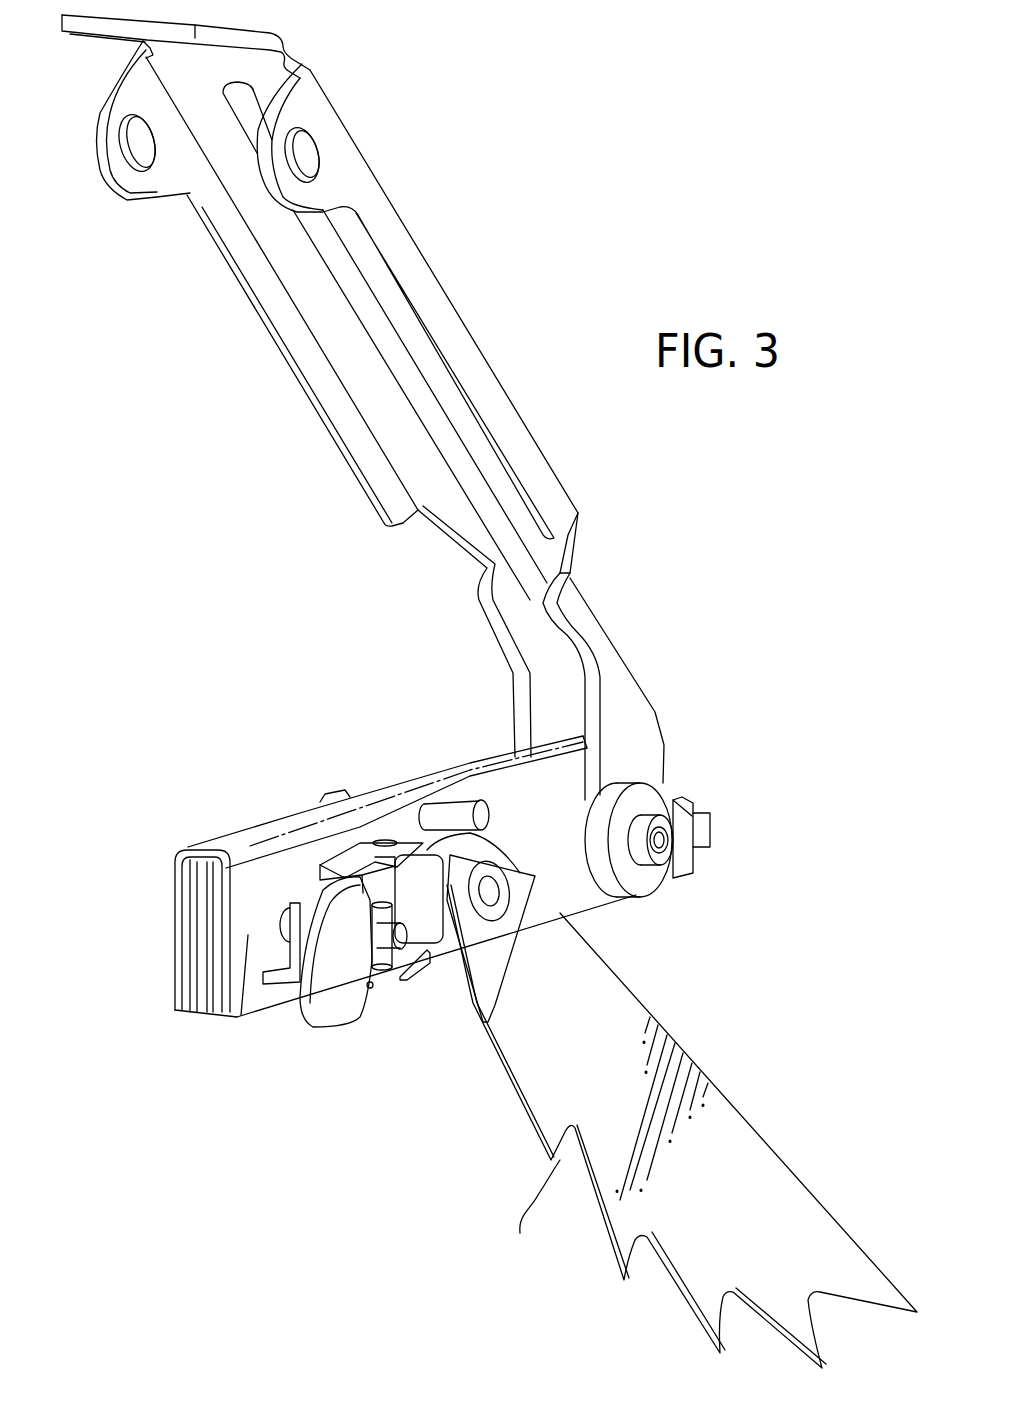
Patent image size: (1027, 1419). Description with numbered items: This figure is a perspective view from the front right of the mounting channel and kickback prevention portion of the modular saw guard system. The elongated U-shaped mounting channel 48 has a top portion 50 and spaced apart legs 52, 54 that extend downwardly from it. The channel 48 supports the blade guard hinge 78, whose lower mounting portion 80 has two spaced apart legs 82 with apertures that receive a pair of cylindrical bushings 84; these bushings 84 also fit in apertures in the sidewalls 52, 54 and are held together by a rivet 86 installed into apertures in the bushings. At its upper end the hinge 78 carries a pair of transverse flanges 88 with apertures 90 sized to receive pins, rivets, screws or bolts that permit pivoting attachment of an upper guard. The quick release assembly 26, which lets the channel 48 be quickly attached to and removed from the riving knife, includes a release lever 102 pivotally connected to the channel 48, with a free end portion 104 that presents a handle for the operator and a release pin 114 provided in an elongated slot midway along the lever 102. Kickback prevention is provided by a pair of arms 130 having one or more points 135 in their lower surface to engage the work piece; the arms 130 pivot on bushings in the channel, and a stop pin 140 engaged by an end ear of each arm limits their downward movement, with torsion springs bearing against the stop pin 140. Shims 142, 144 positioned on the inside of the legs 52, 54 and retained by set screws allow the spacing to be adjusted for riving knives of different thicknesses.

The quick release assembly 26 is at (450, 1070).
The U-shaped mounting channel 48 is at (173, 848).
The top portion 50 is at (253, 830).
The leg 52 is at (178, 898).
The leg 54 is at (247, 943).
The blade guard hinge 78 is at (472, 337).
The lower mounting portion 80 is at (640, 671).
The legs 82 is at (550, 710).
The cylindrical bushings 84 is at (651, 802).
The rivet 86 is at (660, 850).
The transverse flanges 88 is at (152, 205).
The apertures 90 is at (132, 143).
The release lever 102 is at (373, 987).
The free end portion 104 is at (337, 990).
The release pin 114 is at (410, 937).
The kickback arms 130 is at (707, 1143).
The points 135 is at (627, 1280).
The stop pin 140 is at (453, 817).
The shim 142 is at (188, 928).
The shim 144 is at (218, 973).